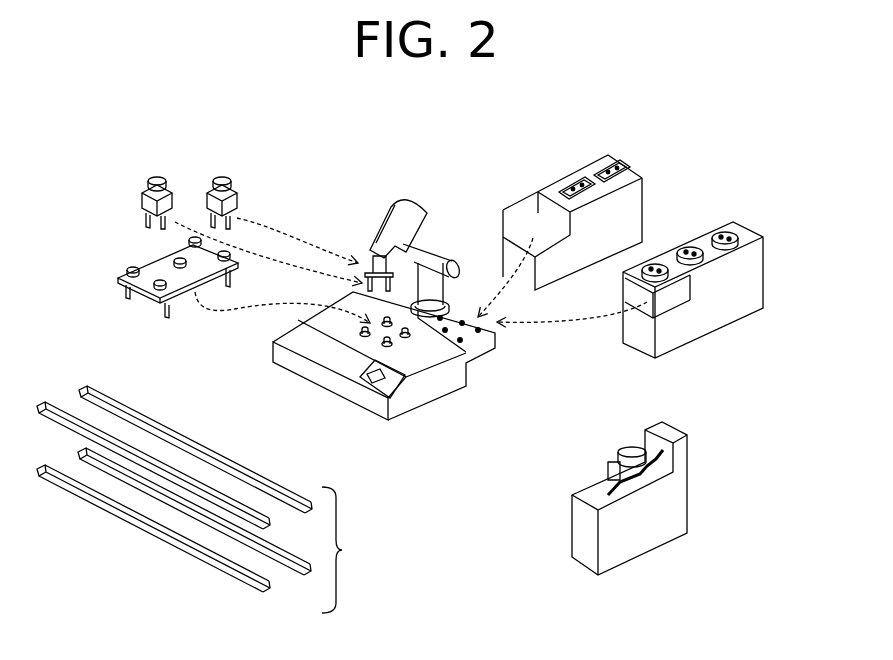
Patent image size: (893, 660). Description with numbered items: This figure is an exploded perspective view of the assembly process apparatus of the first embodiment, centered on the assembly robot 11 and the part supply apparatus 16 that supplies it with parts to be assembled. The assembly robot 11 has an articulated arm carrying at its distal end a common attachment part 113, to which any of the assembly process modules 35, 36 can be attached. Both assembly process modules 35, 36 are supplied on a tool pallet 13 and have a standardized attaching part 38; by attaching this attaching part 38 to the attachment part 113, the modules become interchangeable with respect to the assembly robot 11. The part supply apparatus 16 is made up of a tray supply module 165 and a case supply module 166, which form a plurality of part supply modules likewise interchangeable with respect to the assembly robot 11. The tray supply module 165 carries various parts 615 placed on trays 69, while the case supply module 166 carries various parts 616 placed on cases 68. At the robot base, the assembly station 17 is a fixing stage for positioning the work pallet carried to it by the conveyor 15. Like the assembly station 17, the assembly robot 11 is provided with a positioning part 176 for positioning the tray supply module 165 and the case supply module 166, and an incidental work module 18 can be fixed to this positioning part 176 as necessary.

The part supply apparatus 16 is at (731, 87).
The assembly robot 11 is at (407, 202).
The attachment part 113 is at (372, 255).
The tool pallet 13 is at (157, 265).
The conveyor 15 is at (342, 550).
The assembly station 17 is at (332, 357).
The positioning part 176 is at (465, 330).
The incidental work module 18 is at (642, 530).
The assembly process module 35 is at (140, 201).
The assembly process module 36 is at (238, 199).
The attaching part 38 is at (160, 180).
The tray supply module 165 is at (613, 215).
The case supply module 166 is at (732, 295).
The parts 615 is at (573, 188).
The parts 616 is at (688, 250).
The cases 68 is at (722, 248).
The trays 69 is at (626, 154).